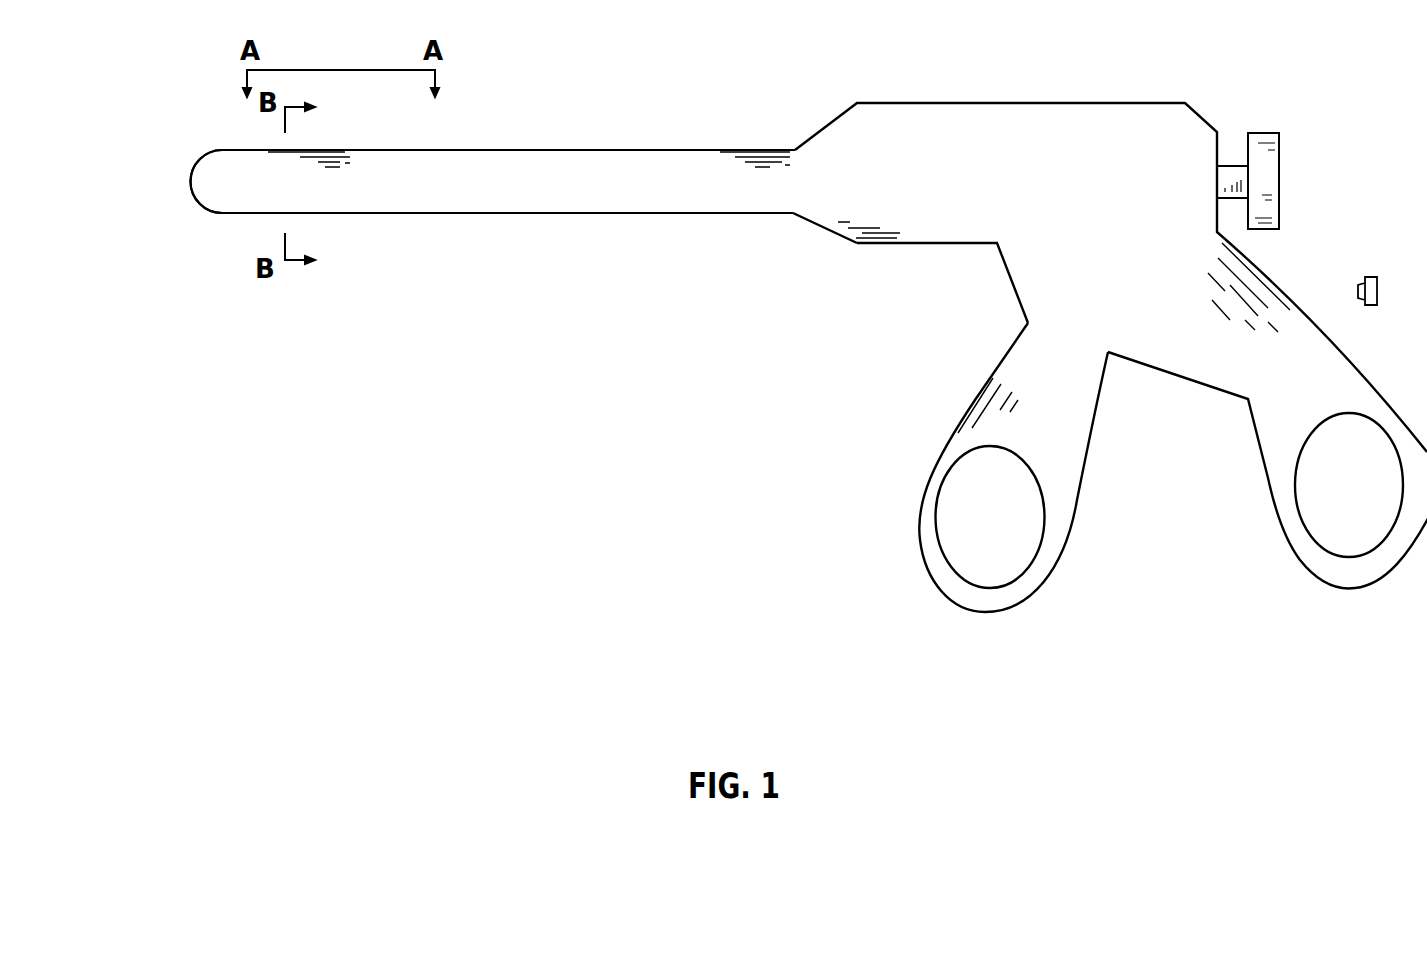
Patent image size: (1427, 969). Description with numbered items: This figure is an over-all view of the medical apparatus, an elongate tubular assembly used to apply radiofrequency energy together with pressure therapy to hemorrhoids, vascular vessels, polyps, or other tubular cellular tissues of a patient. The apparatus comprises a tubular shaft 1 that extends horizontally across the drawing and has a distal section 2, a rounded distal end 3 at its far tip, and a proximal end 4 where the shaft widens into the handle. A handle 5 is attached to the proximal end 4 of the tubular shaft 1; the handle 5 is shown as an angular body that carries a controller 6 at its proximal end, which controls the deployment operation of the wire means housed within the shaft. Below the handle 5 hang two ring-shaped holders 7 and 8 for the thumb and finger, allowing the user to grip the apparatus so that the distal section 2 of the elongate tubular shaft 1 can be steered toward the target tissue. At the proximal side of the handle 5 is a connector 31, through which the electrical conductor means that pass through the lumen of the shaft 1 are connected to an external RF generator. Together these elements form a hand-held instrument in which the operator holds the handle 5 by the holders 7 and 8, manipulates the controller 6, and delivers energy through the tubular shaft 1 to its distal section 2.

The tubular shaft 1 is at (577, 145).
The distal section 2 is at (443, 305).
The distal end 3 is at (195, 203).
The proximal end 4 is at (790, 222).
The handle 5 is at (1007, 98).
The controller 6 is at (1282, 128).
The holder 7 is at (1319, 523).
The holder 8 is at (950, 532).
The connector 31 is at (1262, 272).